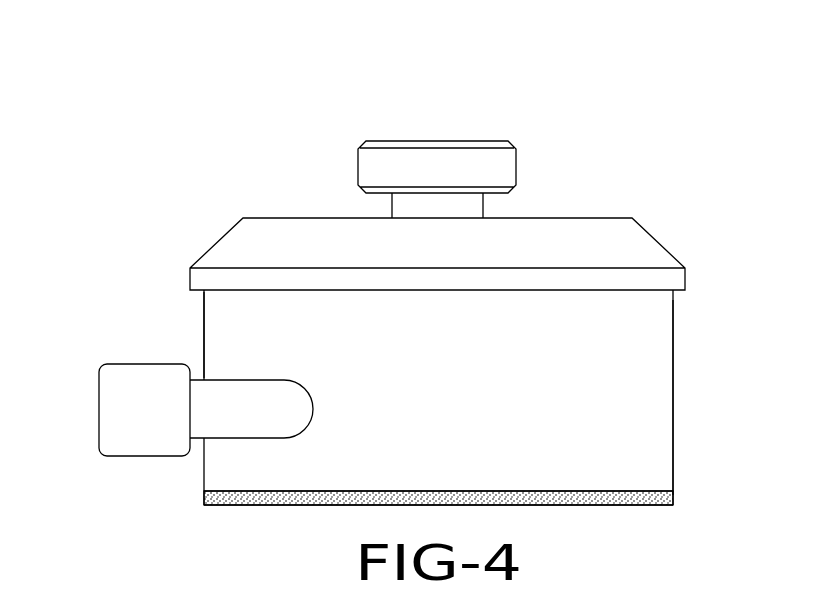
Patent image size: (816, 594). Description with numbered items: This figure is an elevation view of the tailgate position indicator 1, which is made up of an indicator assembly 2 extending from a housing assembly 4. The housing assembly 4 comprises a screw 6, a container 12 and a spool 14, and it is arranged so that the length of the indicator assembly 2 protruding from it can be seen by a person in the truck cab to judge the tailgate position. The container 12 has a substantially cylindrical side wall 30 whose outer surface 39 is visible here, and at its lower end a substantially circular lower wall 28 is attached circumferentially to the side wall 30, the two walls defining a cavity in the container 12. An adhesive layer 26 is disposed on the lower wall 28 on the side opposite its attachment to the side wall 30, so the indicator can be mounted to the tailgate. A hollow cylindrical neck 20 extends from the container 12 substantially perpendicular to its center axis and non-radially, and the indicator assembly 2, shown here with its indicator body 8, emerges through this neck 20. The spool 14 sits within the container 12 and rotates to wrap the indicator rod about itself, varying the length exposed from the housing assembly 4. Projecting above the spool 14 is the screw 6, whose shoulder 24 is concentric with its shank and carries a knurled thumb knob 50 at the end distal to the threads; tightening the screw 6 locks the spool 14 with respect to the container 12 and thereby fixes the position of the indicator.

The tailgate position indicator 1 is at (593, 103).
The indicator assembly 2 is at (120, 368).
The housing assembly 4 is at (674, 325).
The screw 6 is at (518, 160).
The indicator body 8 is at (150, 445).
The container 12 is at (660, 375).
The spool 14 is at (650, 240).
The neck 20 is at (253, 420).
The shoulder 24 is at (485, 205).
The adhesive layer 26 is at (645, 503).
The lower wall 28 is at (557, 490).
The side wall 30 is at (322, 467).
The outer surface 39 is at (203, 318).
The thumb knob 50 is at (465, 153).